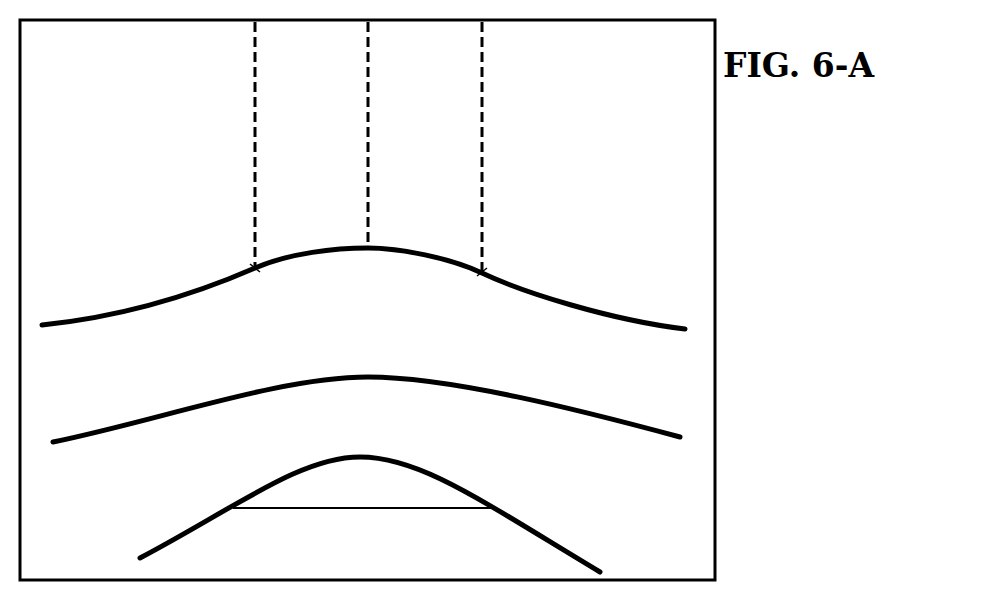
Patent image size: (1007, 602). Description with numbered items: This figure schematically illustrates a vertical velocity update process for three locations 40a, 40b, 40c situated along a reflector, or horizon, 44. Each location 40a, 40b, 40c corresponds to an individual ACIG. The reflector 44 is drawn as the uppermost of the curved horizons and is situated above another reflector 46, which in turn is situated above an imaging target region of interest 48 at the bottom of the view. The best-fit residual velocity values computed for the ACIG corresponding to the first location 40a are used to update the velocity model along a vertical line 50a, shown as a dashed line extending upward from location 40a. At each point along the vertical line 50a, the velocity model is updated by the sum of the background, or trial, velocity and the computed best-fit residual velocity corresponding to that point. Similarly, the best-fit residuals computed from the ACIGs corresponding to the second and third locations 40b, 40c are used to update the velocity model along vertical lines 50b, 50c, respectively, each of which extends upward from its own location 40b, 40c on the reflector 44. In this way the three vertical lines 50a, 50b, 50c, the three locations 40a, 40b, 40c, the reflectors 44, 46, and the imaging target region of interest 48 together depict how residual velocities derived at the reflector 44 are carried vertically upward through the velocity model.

The vertical line 50a is at (255, 131).
The vertical line 50b is at (367, 125).
The vertical line 50c is at (481, 123).
The location 40a is at (257, 272).
The location 40b is at (368, 250).
The location 40c is at (483, 272).
The reflector 44 is at (648, 318).
The reflector 46 is at (655, 425).
The imaging target region of interest 48 is at (398, 489).